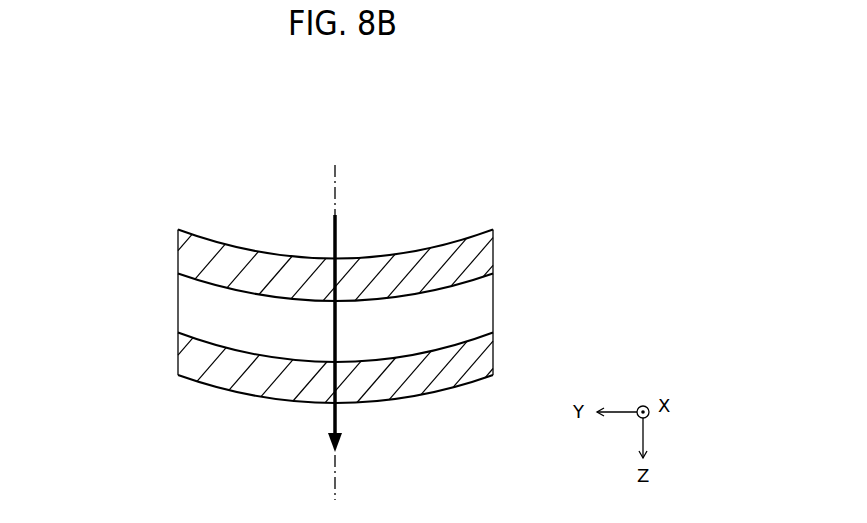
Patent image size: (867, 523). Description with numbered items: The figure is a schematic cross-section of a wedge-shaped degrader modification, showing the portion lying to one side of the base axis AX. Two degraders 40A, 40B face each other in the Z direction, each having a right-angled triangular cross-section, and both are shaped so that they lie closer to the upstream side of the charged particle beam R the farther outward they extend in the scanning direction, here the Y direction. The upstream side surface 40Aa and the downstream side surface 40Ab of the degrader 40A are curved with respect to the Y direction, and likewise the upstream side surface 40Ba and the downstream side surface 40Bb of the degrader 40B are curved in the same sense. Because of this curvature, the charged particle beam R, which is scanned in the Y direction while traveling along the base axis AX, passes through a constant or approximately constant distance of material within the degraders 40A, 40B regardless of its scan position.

The degrader 40A is at (379, 247).
The upstream side surface 40Aa is at (462, 240).
The downstream side surface 40Ab is at (440, 285).
The degrader 40B is at (302, 372).
The upstream side surface 40Ba is at (220, 343).
The downstream side surface 40Bb is at (302, 403).
The base axis AX is at (336, 180).
The charged particle beam R is at (338, 245).